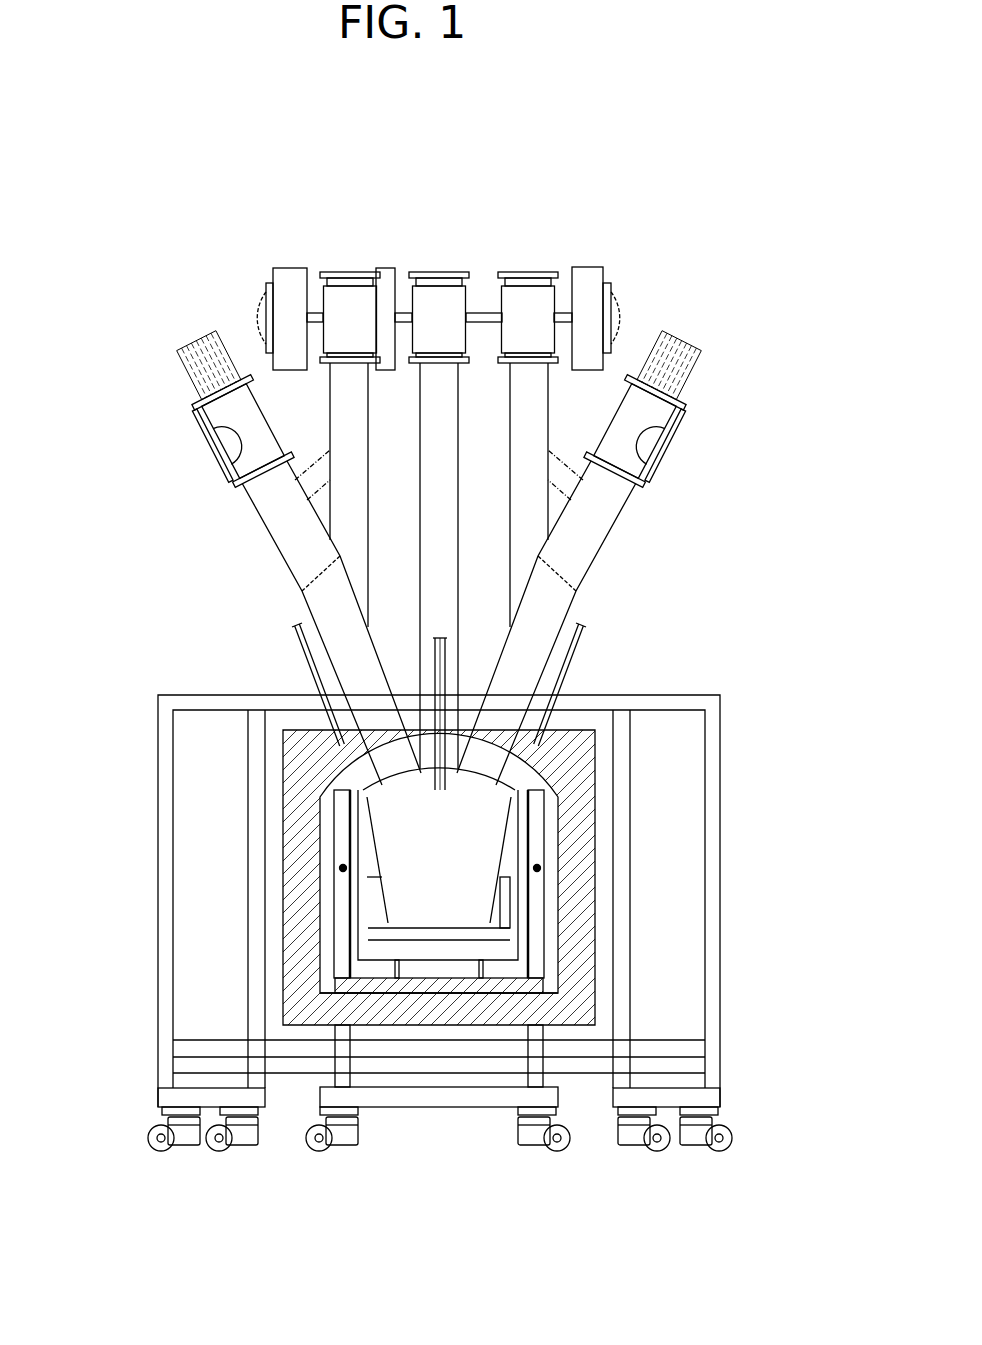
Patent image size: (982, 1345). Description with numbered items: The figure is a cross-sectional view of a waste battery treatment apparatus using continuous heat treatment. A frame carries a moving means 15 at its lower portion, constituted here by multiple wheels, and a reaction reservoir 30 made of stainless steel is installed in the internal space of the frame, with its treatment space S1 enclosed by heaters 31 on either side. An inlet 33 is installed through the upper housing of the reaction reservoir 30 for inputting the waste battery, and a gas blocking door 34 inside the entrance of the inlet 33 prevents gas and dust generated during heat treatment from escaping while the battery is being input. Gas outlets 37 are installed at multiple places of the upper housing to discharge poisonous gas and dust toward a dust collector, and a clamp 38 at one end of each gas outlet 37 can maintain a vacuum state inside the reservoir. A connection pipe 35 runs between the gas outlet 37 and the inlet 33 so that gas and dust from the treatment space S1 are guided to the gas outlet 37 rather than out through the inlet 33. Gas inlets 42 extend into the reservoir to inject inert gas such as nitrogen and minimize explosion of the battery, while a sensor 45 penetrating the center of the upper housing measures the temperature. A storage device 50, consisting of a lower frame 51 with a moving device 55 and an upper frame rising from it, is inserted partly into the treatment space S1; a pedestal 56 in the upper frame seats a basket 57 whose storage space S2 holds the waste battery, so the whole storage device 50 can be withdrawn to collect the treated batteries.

The moving means 15 is at (220, 1152).
The reaction reservoir 30 is at (597, 765).
The heater 31 is at (597, 803).
The inlet 33 is at (287, 533).
The gas blocking door 34 is at (195, 432).
The connection pipe 35 is at (305, 487).
The gas outlet 37 is at (353, 513).
The clamp 38 is at (352, 270).
The gas inlet 42 is at (300, 626).
The sensor 45 is at (447, 643).
The storage device 50 is at (517, 912).
The lower frame 51 is at (498, 1098).
The moving device 55 is at (322, 1152).
The pedestal 56 is at (447, 933).
The basket 57 is at (383, 907).
The treatment space S1 is at (343, 868).
The storage space S2 is at (438, 864).